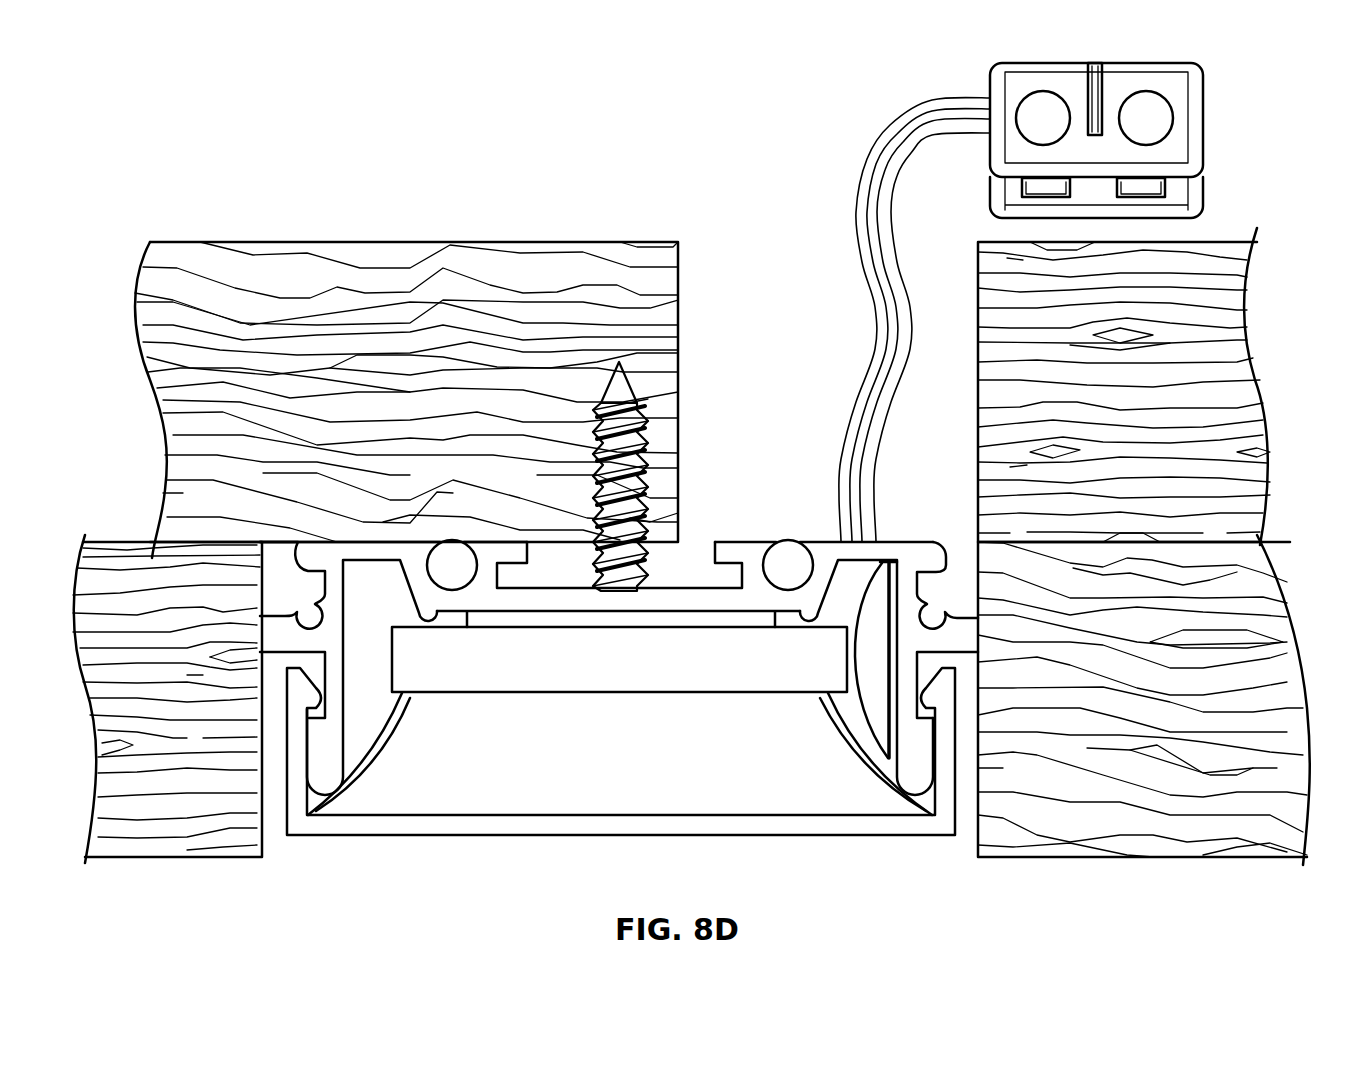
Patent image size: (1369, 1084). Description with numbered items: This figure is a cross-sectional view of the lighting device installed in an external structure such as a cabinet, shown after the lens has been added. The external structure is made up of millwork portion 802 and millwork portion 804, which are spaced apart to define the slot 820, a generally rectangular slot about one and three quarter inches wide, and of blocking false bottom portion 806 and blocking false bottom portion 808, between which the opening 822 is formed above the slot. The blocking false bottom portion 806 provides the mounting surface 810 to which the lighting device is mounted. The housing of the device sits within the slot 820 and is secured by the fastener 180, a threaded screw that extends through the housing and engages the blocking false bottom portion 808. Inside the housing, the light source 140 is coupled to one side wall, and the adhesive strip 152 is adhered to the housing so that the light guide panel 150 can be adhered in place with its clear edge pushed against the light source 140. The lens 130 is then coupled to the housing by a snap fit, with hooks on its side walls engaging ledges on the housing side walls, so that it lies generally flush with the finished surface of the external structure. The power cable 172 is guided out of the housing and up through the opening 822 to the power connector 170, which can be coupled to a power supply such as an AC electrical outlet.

The lens 130 is at (777, 828).
The light source 140 is at (872, 712).
The light guide panel 150 is at (572, 662).
The adhesive strip 152 is at (490, 617).
The power connector 170 is at (1012, 80).
The power cable 172 is at (873, 163).
The fastener 180 is at (660, 428).
The millwork portion 802 is at (133, 558).
The millwork portion 804 is at (1268, 556).
The blocking false bottom portion 806 is at (275, 258).
The blocking false bottom portion 808 is at (1212, 250).
The mounting surface 810 is at (378, 539).
The slot 820 is at (388, 853).
The opening 822 is at (733, 218).